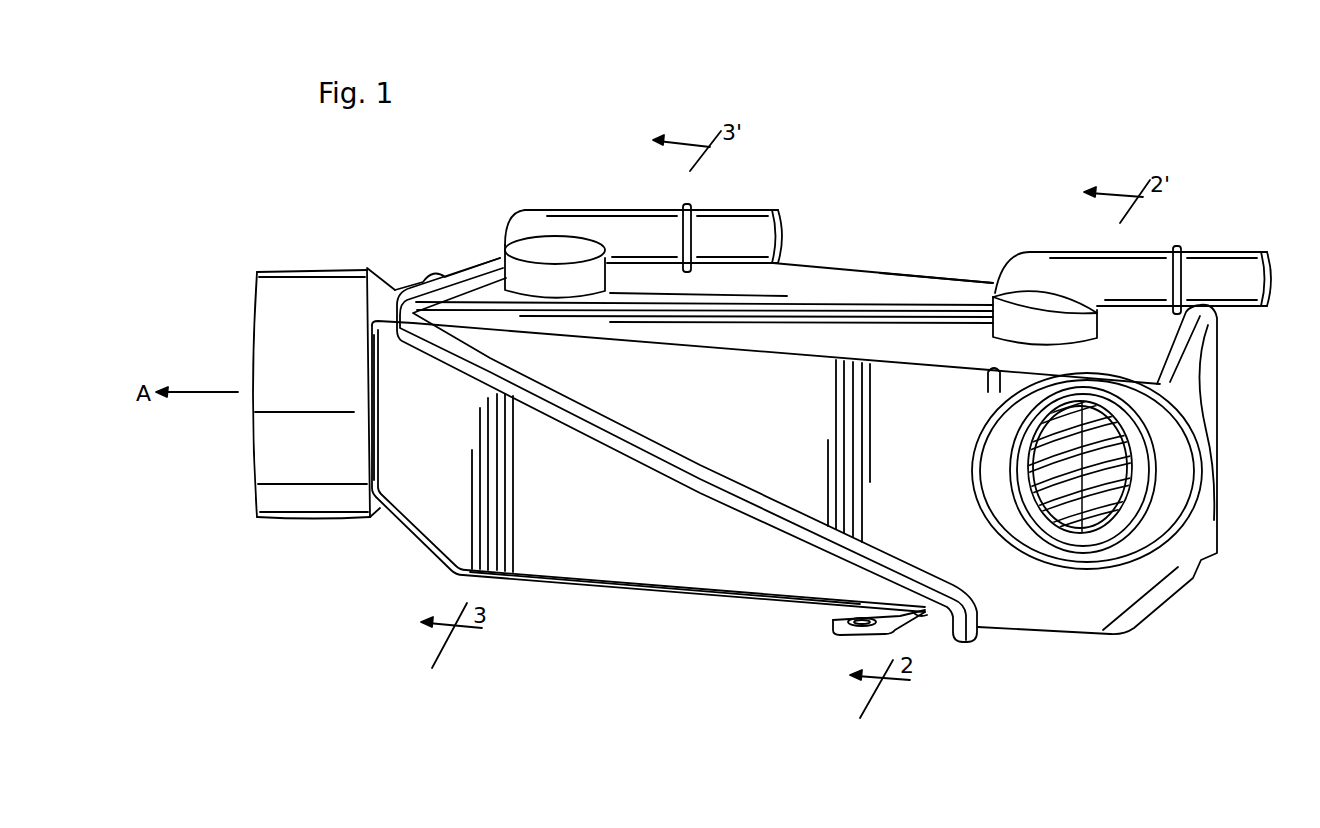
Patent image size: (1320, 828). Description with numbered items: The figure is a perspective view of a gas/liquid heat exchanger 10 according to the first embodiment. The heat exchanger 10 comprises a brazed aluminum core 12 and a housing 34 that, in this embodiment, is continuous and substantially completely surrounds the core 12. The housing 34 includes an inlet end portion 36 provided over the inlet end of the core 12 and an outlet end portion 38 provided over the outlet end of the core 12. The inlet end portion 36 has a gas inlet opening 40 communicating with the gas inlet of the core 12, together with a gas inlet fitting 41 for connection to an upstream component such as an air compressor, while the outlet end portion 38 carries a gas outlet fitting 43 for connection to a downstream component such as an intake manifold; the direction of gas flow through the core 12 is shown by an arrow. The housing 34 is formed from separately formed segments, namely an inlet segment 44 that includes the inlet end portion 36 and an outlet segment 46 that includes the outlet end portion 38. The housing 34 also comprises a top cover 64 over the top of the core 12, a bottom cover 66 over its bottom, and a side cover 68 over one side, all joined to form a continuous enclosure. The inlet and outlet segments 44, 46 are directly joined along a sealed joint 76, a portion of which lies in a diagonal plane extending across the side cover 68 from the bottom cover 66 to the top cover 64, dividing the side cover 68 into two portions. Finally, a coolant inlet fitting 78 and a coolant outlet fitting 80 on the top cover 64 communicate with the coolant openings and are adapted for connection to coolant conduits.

The heat exchanger 10 is at (853, 254).
The core 12 is at (1125, 462).
The housing 34 is at (922, 277).
The inlet end portion 36 is at (1135, 621).
The outlet end portion 38 is at (385, 456).
The gas inlet opening 40 is at (1070, 520).
The gas inlet fitting 41 is at (1158, 508).
The gas outlet fitting 43 is at (320, 268).
The inlet segment 44 is at (830, 283).
The outlet segment 46 is at (600, 567).
The top cover 64 is at (975, 290).
The bottom cover 66 is at (737, 603).
The side cover 68 is at (578, 463).
The sealed joint 76 is at (742, 508).
The coolant inlet fitting 78 is at (563, 230).
The coolant outlet fitting 80 is at (1155, 266).